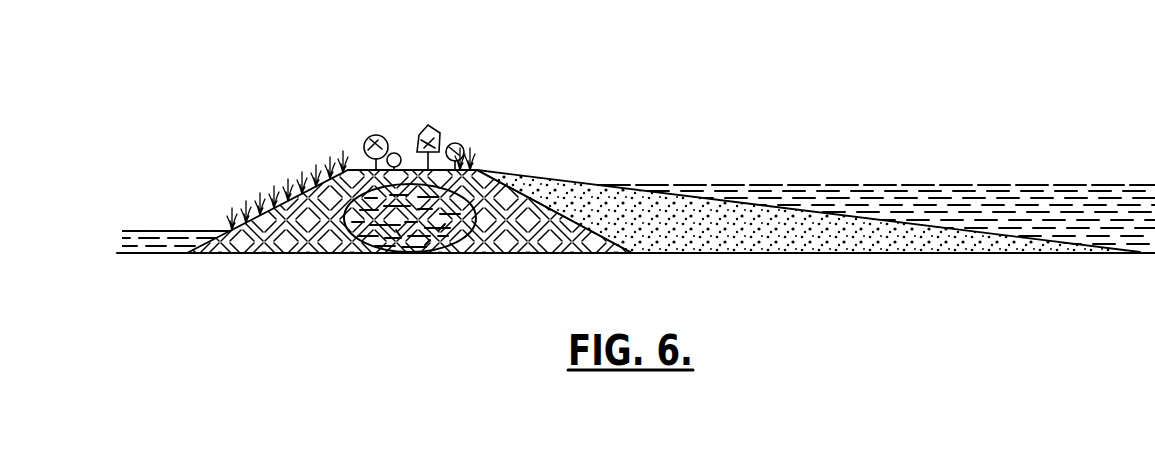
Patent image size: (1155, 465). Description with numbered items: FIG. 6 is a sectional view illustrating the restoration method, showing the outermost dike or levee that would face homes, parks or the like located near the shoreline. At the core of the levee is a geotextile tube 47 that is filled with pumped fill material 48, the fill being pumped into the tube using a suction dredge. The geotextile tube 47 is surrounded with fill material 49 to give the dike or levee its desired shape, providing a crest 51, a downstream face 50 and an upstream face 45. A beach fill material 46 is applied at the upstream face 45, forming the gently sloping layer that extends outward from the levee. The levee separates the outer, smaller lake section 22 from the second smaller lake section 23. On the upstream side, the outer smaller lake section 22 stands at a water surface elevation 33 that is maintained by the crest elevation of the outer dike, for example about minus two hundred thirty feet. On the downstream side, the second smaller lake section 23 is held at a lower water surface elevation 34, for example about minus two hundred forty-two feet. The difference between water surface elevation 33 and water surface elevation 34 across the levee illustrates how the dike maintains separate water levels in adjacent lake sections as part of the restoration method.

The outer smaller lake section 22 is at (1042, 188).
The second smaller lake section 23 is at (128, 239).
The water surface elevation 33 is at (856, 181).
The water surface elevation 34 is at (197, 227).
The upstream face 45 is at (517, 172).
The beach fill material 46 is at (569, 212).
The geotextile tube 47 is at (452, 246).
The pumped fill material 48 is at (405, 238).
The fill material 49 is at (233, 256).
The downstream face 50 is at (281, 187).
The crest 51 is at (412, 168).